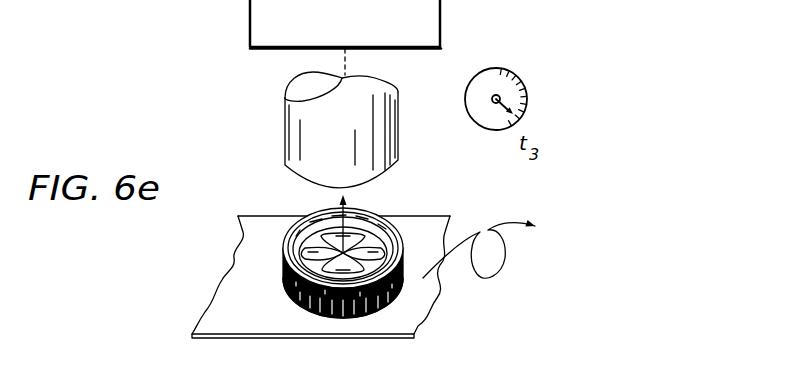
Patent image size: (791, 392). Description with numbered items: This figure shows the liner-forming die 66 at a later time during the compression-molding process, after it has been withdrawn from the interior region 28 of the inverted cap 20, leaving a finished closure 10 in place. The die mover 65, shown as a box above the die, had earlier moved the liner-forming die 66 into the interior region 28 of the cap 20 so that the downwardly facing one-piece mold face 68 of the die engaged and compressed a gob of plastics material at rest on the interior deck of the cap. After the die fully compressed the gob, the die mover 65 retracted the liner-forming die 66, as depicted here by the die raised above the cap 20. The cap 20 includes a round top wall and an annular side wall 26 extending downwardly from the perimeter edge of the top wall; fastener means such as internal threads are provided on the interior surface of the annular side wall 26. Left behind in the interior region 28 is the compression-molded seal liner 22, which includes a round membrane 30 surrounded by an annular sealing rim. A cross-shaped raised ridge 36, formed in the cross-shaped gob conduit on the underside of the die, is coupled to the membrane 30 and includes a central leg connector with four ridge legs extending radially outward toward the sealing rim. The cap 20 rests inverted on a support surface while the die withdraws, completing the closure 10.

The closure 10 is at (422, 229).
The cap 20 is at (270, 292).
The compression-molded seal liner 22 is at (303, 213).
The annular side wall 26 is at (300, 300).
The interior region 28 is at (370, 215).
The round membrane 30 is at (287, 262).
The cross-shaped raised ridge 36 is at (400, 293).
The die mover 65 is at (249, 23).
The liner-forming die 66 is at (278, 88).
The one-piece mold face 68 is at (290, 180).